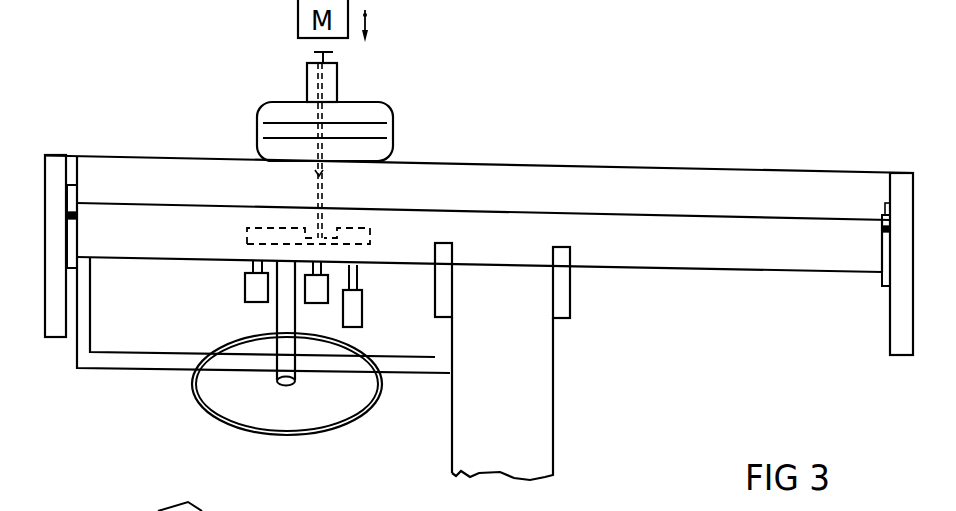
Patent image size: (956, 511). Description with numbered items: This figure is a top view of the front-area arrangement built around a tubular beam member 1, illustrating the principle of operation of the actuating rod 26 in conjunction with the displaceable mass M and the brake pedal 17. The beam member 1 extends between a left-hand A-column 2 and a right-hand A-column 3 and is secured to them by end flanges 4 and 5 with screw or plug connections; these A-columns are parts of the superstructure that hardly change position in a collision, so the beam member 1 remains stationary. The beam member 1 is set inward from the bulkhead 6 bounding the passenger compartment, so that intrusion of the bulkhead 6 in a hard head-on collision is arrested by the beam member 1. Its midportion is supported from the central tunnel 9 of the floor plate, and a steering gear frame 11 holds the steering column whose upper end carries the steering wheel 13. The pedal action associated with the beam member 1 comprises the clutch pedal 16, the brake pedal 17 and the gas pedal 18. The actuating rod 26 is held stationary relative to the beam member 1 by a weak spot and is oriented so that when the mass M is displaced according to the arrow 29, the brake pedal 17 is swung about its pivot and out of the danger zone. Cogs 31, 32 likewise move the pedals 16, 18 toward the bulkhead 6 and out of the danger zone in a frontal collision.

The beam member 1 is at (746, 243).
The left-hand A-column 2 is at (55, 187).
The right-hand A-column 3 is at (905, 202).
The end flange 4 is at (888, 228).
The end flange 5 is at (77, 185).
The bulkhead 6 is at (697, 167).
The central tunnel 9 is at (516, 359).
The steering gear frame 11 is at (170, 360).
The steering wheel 13 is at (192, 397).
The clutch pedal 16 is at (352, 305).
The brake pedal 17 is at (320, 287).
The gas pedal 18 is at (253, 287).
The actuating rod 26 is at (313, 160).
The arrow 29 is at (365, 15).
The cog 31 is at (265, 236).
The cog 32 is at (342, 236).